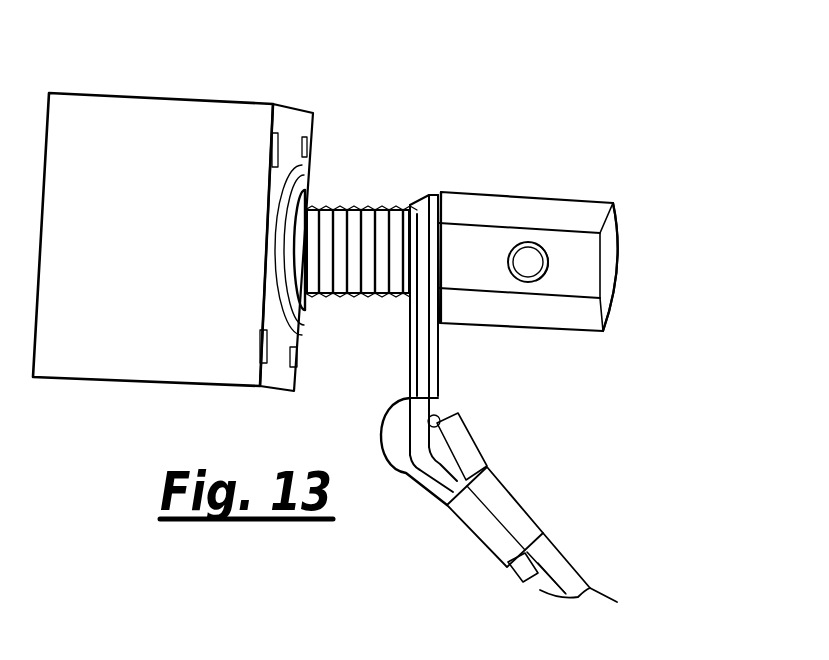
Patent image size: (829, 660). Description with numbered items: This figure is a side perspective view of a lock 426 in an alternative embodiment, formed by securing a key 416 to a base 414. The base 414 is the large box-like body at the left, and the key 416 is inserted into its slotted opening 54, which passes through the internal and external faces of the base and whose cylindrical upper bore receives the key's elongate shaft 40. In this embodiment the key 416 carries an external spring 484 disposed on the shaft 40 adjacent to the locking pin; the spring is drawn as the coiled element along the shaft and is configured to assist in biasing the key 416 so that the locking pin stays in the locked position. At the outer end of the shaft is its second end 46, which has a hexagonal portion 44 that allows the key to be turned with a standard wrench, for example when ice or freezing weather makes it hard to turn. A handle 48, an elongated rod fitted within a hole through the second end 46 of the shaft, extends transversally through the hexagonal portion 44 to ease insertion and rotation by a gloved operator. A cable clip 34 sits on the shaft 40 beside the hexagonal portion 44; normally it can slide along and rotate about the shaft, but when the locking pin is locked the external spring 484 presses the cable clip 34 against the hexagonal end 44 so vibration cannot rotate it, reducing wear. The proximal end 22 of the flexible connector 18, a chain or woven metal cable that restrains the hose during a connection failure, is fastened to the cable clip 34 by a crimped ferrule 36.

The base 414 is at (113, 84).
The lock 426 is at (324, 77).
The slotted opening 54 is at (312, 195).
The external spring 484 is at (360, 209).
The shaft 40 is at (360, 294).
The cable clip 34 is at (410, 362).
The hexagonal portion 44 is at (585, 203).
The handle 48 is at (529, 247).
The second end of shaft 46 is at (605, 323).
The key 416 is at (414, 166).
The proximal end of flexible connector 22 is at (467, 427).
The crimped ferrule 36 is at (487, 550).
The flexible connector 18 is at (575, 568).